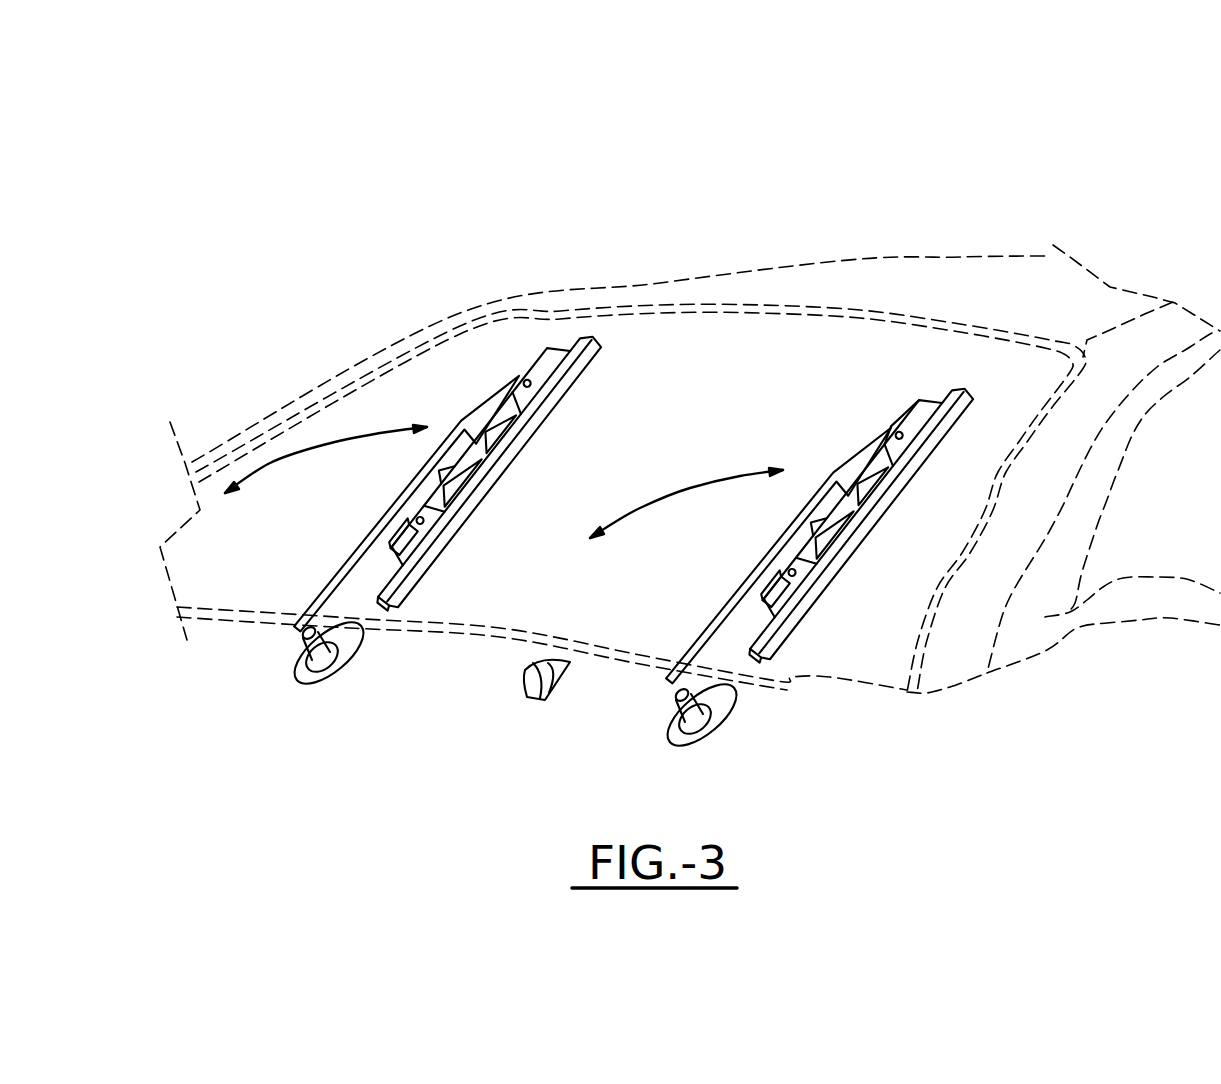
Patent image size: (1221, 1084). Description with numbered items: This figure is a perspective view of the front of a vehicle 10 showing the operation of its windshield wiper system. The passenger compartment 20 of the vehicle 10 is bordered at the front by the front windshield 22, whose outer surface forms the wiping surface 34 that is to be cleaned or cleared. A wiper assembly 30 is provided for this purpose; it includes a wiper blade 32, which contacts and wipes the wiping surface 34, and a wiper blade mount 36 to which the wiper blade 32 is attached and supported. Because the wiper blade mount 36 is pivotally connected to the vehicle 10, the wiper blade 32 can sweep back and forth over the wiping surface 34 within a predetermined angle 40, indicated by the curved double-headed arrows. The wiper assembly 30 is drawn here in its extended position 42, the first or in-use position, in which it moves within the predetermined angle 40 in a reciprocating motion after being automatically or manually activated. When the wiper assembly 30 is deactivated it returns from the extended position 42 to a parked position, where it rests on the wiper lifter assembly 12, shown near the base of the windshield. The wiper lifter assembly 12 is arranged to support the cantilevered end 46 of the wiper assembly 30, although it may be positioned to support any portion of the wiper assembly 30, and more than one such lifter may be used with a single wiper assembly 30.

The vehicle 10 is at (1090, 233).
The wiper lifter assembly 12 is at (552, 685).
The passenger compartment 20 is at (858, 223).
The front windshield 22 is at (395, 380).
The wiper assembly 30 is at (913, 398).
The wiper blade 32 is at (598, 343).
The wiping surface 34 is at (862, 347).
The wiper blade mount 36 is at (545, 362).
The predetermined angle 40 is at (323, 445).
The extended position 42 is at (487, 383).
The cantilevered end 46 is at (980, 385).